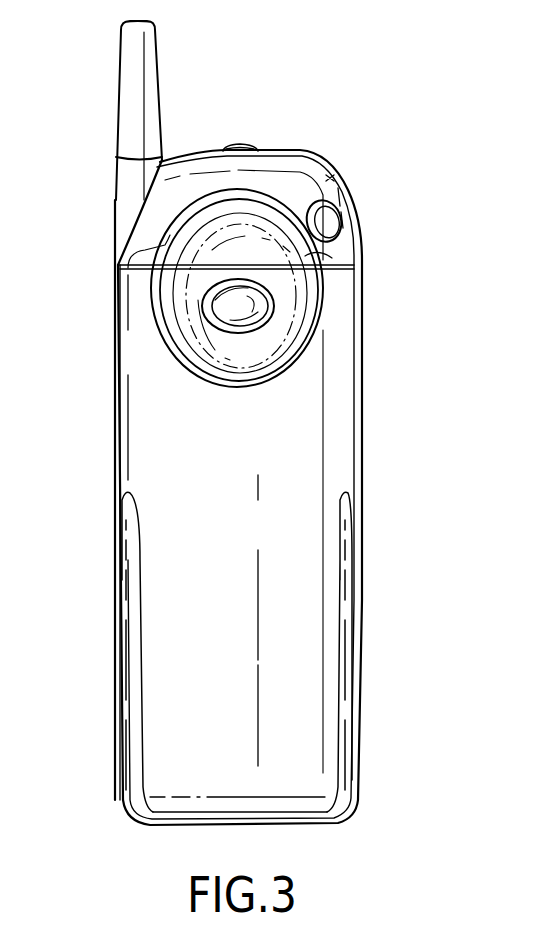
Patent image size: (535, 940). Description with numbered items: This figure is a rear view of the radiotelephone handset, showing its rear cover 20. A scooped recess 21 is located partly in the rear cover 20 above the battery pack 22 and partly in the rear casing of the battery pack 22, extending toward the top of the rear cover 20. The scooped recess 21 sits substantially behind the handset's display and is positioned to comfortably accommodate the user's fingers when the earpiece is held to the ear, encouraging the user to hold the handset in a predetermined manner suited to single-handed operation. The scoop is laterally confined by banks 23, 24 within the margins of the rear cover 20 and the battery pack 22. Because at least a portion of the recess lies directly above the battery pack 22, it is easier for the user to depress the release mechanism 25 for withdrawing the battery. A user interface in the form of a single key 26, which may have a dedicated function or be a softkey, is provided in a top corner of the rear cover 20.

The rear cover 20 is at (330, 178).
The scooped recess 21 is at (122, 258).
The battery pack 22 is at (118, 452).
The bank 23 is at (325, 249).
The bank 24 is at (157, 318).
The release mechanism 25 is at (255, 289).
The single key 26 is at (330, 223).